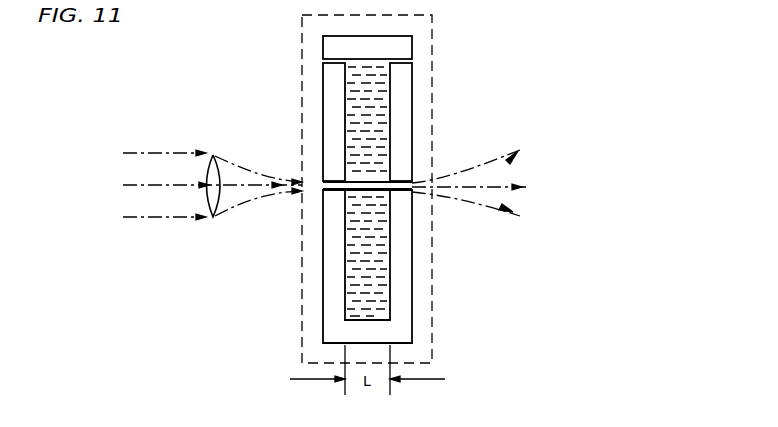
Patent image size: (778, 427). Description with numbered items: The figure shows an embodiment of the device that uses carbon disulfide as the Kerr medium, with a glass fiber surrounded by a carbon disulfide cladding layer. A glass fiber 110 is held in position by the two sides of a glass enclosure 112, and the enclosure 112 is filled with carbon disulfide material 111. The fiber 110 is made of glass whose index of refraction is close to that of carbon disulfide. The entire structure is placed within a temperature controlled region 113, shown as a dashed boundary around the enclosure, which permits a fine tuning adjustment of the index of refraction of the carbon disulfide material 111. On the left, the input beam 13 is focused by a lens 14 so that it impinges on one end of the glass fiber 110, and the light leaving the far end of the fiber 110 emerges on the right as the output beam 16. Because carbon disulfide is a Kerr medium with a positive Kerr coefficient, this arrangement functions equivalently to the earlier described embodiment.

The input beam 13 is at (138, 210).
The lens 14 is at (215, 170).
The output beam 16 is at (492, 176).
The glass fiber 110 is at (380, 187).
The carbon disulfide material 111 is at (383, 100).
The glass enclosure 112 is at (331, 78).
The temperature controlled region 113 is at (425, 44).